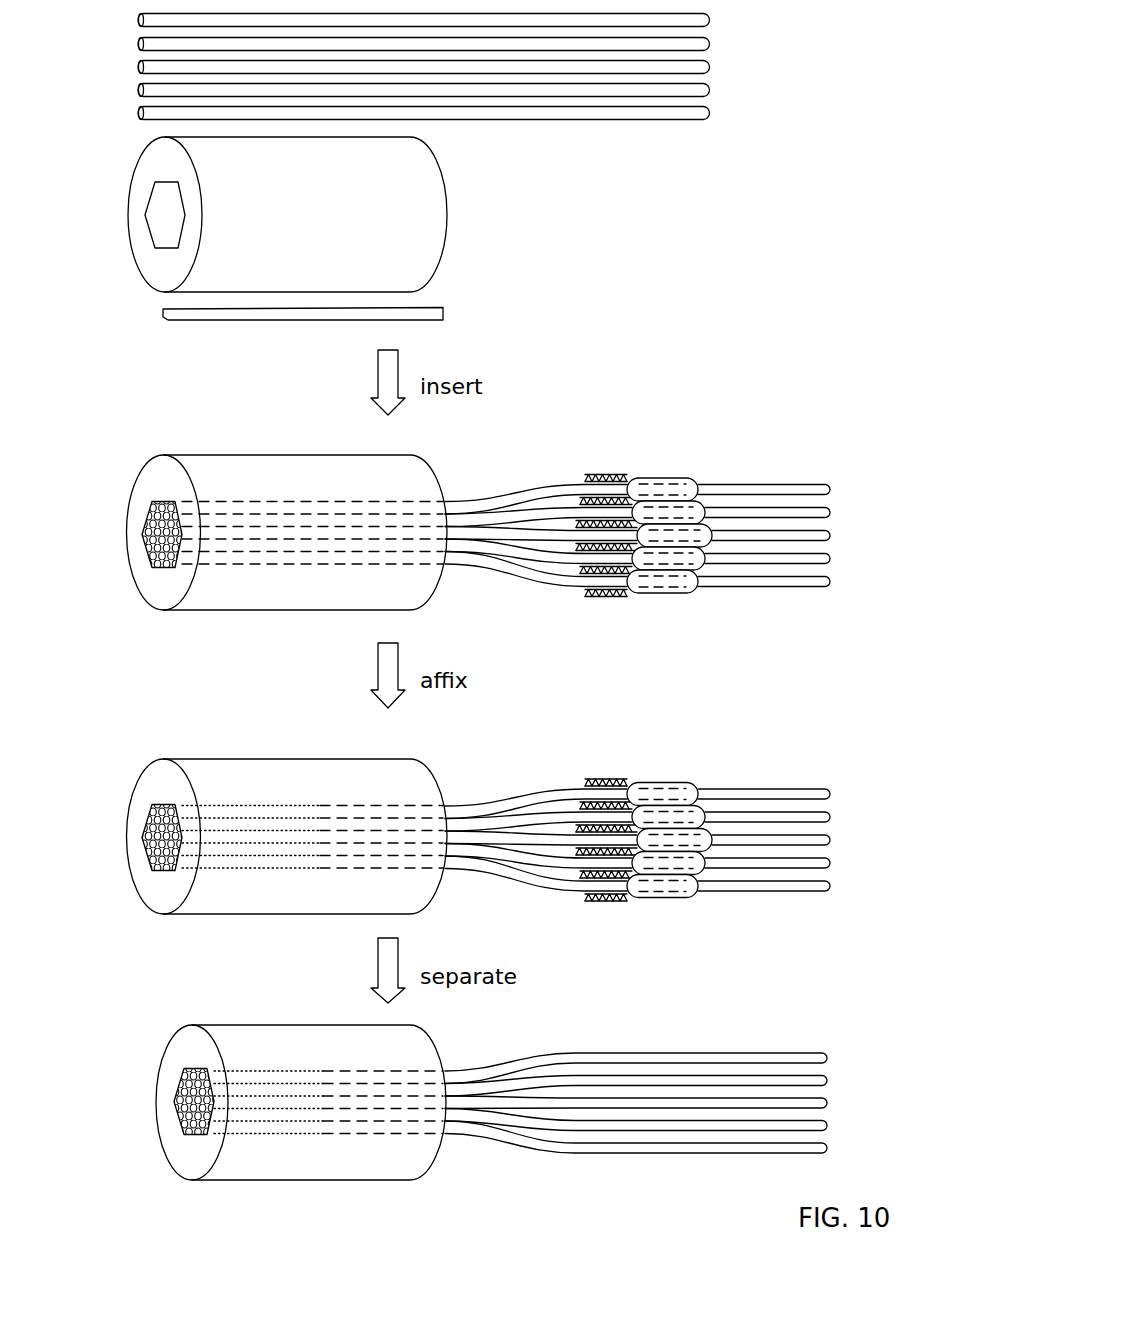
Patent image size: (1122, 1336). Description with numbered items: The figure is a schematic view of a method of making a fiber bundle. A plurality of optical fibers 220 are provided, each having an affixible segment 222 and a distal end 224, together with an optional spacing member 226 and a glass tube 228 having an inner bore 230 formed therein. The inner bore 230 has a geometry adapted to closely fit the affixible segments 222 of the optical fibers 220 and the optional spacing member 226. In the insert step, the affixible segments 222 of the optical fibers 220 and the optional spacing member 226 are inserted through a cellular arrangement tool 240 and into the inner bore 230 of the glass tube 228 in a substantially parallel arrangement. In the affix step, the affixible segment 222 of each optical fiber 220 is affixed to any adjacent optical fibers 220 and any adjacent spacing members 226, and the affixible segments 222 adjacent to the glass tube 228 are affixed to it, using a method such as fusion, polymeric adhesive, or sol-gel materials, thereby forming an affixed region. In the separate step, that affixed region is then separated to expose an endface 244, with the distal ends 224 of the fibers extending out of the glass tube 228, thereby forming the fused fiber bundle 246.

The optical fibers 220 is at (571, 115).
The distal end 224 is at (710, 49).
The glass tube 228 is at (397, 220).
The inner bore 230 is at (162, 219).
The spacing member 226 is at (423, 318).
The cellular arrangement tool 240 is at (647, 478).
The affixible segment 222 is at (308, 745).
The endface 244 is at (121, 1091).
The fused fiber bundle 246 is at (569, 1022).